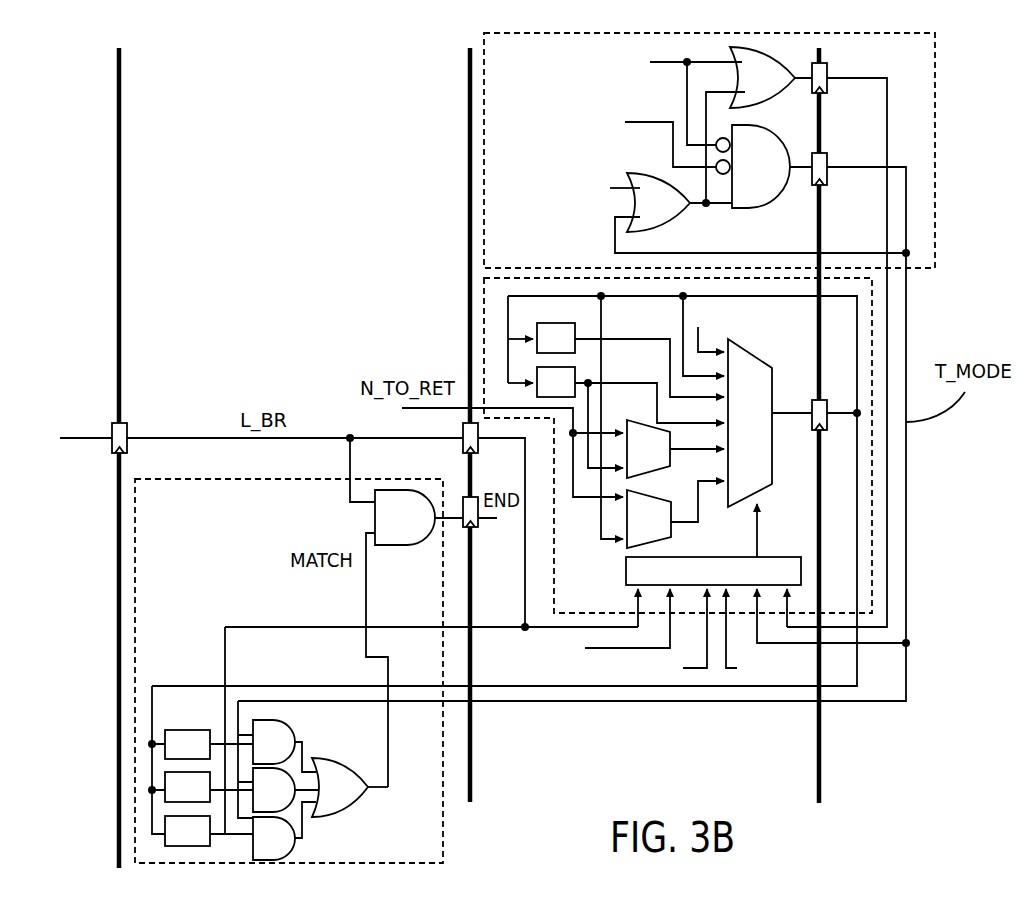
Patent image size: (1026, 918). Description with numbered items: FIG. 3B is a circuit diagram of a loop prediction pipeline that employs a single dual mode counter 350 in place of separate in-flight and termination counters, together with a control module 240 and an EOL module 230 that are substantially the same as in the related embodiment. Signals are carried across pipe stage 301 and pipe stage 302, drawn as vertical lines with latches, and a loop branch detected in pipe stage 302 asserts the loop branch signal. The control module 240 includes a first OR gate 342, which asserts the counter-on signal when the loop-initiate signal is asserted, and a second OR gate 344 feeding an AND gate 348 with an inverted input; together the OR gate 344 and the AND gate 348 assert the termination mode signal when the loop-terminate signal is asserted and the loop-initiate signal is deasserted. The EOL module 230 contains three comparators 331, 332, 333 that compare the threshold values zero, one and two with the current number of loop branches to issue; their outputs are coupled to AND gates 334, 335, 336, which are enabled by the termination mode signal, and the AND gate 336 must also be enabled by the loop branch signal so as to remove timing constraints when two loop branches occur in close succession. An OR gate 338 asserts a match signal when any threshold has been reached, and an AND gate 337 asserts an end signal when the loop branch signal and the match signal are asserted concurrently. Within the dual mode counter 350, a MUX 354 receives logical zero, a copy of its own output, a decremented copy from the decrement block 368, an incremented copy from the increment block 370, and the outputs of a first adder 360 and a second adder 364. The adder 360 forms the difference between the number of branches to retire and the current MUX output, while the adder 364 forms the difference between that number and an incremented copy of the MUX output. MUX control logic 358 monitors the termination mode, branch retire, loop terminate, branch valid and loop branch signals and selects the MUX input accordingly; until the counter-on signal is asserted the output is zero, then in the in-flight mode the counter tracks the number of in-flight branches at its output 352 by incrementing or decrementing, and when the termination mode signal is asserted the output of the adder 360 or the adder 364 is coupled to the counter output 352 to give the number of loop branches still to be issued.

The pipe stage 301 is at (182, 453).
The pipe stage 302 is at (586, 353).
The EOL module 230 is at (182, 511).
The control module 240 is at (528, 263).
The dual mode counter 350 is at (595, 605).
The comparator 331 is at (203, 753).
The comparator 332 is at (203, 796).
The comparator 333 is at (203, 839).
The AND gate 334 is at (288, 752).
The AND gate 335 is at (288, 800).
The AND gate 336 is at (288, 849).
The AND gate 337 is at (415, 528).
The OR gate 338 is at (360, 798).
The OR gate 342 is at (780, 88).
The OR gate 344 is at (675, 215).
The AND gate 348 is at (773, 178).
The counter output 352 is at (856, 412).
The MUX 354 is at (765, 435).
The MUX control logic 358 is at (730, 580).
The first adder 360 is at (668, 460).
The adder 364 is at (668, 533).
The decrement block 368 is at (572, 350).
The increment block 370 is at (572, 393).